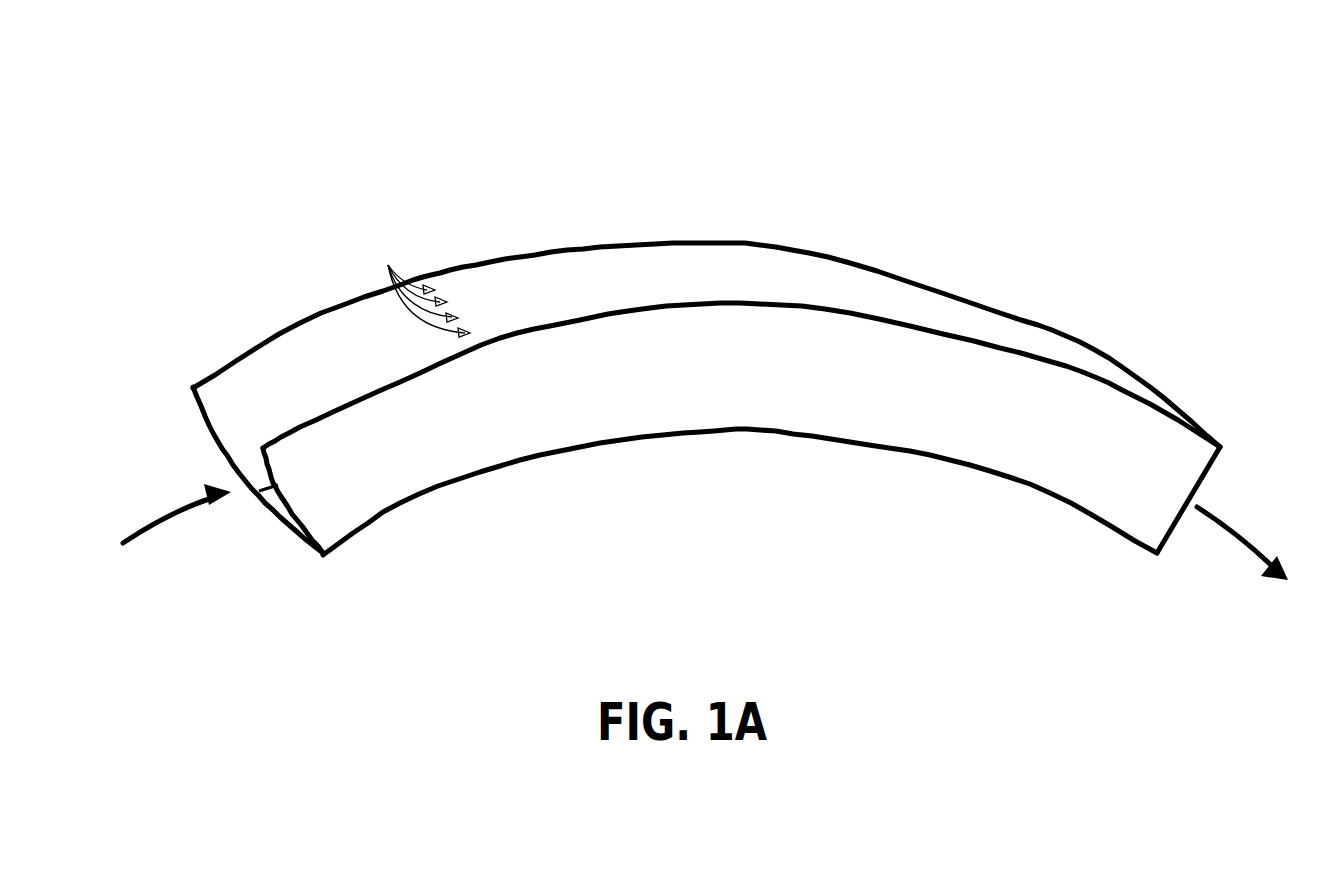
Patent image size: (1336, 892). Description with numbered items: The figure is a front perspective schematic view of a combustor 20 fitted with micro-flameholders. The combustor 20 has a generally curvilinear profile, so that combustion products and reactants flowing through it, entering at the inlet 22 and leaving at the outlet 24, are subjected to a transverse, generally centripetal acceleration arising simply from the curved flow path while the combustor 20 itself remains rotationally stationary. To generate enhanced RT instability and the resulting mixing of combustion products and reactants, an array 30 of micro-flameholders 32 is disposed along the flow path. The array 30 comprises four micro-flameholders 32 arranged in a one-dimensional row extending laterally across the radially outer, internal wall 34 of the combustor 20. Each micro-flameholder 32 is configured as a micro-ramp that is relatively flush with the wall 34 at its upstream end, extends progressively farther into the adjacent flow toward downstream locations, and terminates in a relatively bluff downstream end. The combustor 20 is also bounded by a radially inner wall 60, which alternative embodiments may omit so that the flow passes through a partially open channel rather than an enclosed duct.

The combustor 20 is at (702, 353).
The inlet 22 is at (183, 503).
The outlet 24 is at (1253, 537).
The array of micro-flameholders 30 is at (472, 288).
The micro-flameholders 32 is at (388, 265).
The radially outer wall 34 is at (778, 267).
The radially inner wall 60 is at (500, 460).